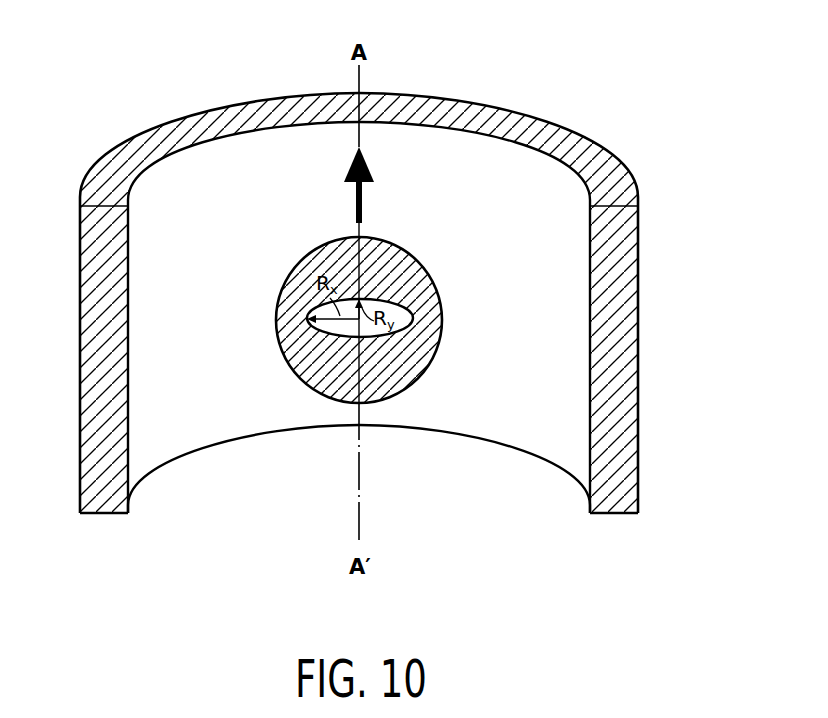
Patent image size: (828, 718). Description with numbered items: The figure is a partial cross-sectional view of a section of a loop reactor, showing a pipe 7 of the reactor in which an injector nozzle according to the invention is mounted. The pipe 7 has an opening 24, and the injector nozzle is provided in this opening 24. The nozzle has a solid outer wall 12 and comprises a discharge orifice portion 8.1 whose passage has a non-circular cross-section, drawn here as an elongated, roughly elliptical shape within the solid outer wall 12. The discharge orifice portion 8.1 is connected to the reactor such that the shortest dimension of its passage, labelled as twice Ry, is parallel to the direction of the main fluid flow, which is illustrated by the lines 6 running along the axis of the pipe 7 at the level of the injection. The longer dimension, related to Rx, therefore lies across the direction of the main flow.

The lines illustrating the direction of the main fluid flow 6 is at (364, 193).
The pipe 7 is at (623, 300).
The discharge orifice portion 8.1 is at (413, 319).
The solid outer wall 12 is at (407, 280).
The opening 24 is at (434, 355).